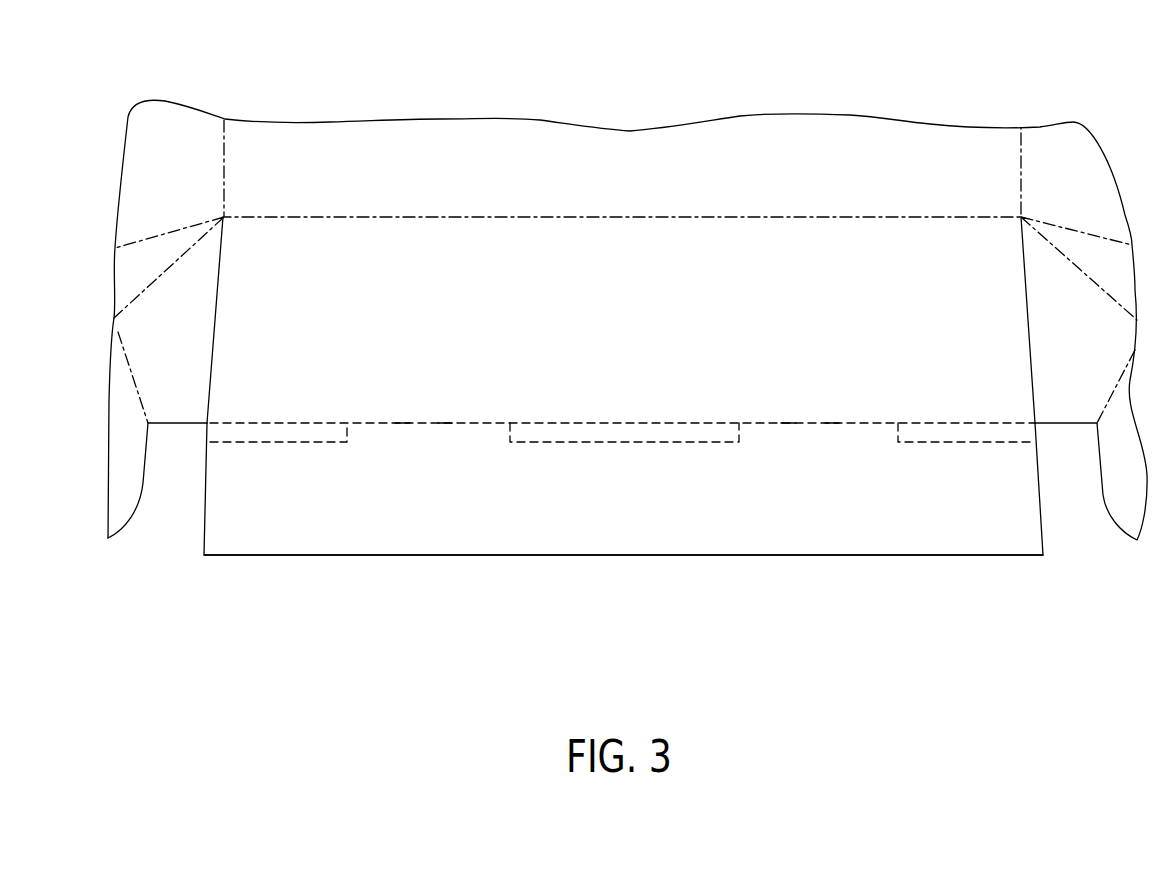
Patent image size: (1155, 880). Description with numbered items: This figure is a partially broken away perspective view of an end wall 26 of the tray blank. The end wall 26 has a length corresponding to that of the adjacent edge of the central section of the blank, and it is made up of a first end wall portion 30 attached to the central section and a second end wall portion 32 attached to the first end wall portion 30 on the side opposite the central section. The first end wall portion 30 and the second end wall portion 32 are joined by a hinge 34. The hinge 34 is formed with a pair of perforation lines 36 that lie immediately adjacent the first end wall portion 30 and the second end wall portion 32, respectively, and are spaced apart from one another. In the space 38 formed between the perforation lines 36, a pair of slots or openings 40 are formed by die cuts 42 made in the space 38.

The end wall 26 is at (537, 524).
The first end wall portion 30 is at (423, 265).
The second end wall portion 32 is at (275, 535).
The hinge 34 is at (208, 432).
The perforation lines 36 is at (289, 442).
The space 38 is at (671, 423).
The slots or openings 40 is at (402, 423).
The die cuts 42 is at (445, 423).